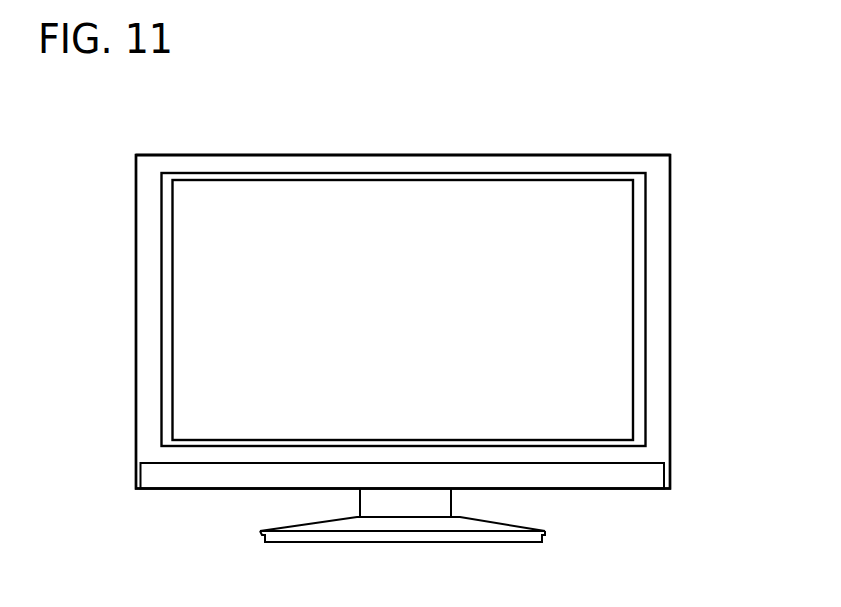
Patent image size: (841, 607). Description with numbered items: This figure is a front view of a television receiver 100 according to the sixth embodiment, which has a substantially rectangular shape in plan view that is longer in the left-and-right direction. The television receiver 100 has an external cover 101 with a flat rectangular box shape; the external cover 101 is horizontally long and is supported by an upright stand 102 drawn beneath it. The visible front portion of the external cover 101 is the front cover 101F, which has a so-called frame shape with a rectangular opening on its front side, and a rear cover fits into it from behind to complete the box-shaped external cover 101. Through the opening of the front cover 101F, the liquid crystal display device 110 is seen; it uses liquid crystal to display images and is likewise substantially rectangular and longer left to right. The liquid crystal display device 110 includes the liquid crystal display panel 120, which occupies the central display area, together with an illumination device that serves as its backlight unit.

The television receiver 100 is at (699, 104).
The external cover 101 is at (272, 149).
The front cover 101F is at (467, 160).
The liquid crystal display device 110 is at (610, 255).
The liquid crystal display panel 120 is at (578, 323).
The stand 102 is at (408, 542).